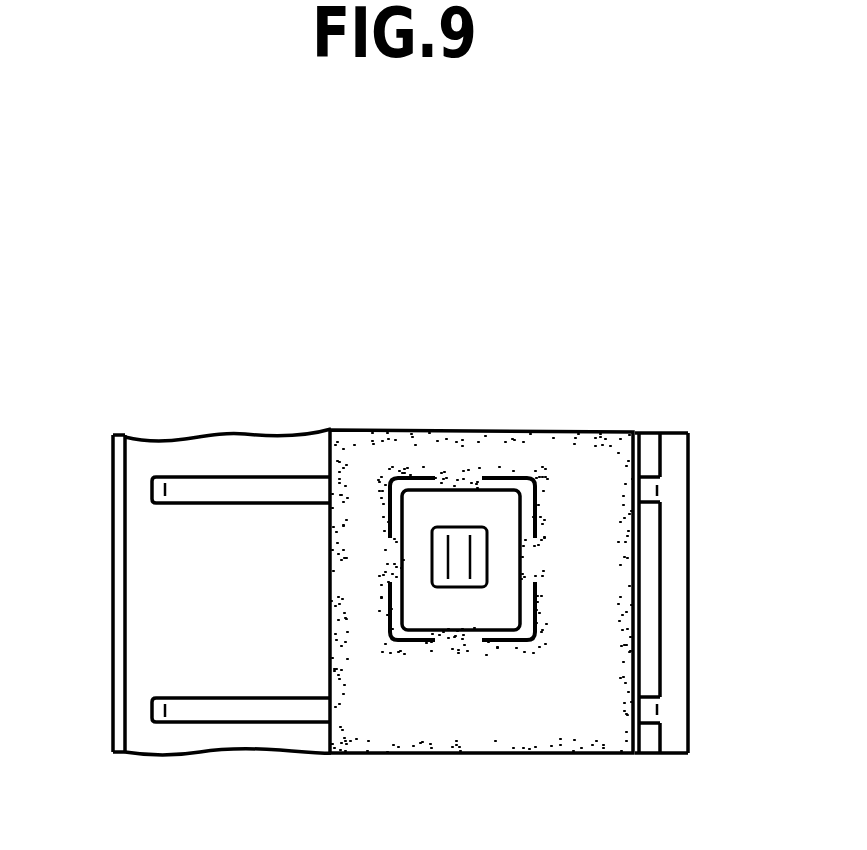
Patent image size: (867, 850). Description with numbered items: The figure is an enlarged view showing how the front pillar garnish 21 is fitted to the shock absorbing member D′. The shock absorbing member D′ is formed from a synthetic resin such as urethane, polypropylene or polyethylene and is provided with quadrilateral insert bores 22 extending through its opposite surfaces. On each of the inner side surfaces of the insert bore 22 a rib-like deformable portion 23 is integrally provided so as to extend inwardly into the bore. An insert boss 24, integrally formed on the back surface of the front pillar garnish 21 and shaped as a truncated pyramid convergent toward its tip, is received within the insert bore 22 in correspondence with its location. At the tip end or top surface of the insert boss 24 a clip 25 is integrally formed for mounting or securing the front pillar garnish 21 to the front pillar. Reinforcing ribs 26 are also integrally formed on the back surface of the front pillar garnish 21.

The front pillar garnish 21 is at (148, 637).
The insert bore 22 is at (417, 598).
The rib-like deformable portion 23 is at (398, 553).
The insert boss 24 is at (493, 601).
The clip 25 is at (458, 572).
The reinforcing rib 26 is at (215, 495).
The shock absorbing member D′ is at (637, 626).